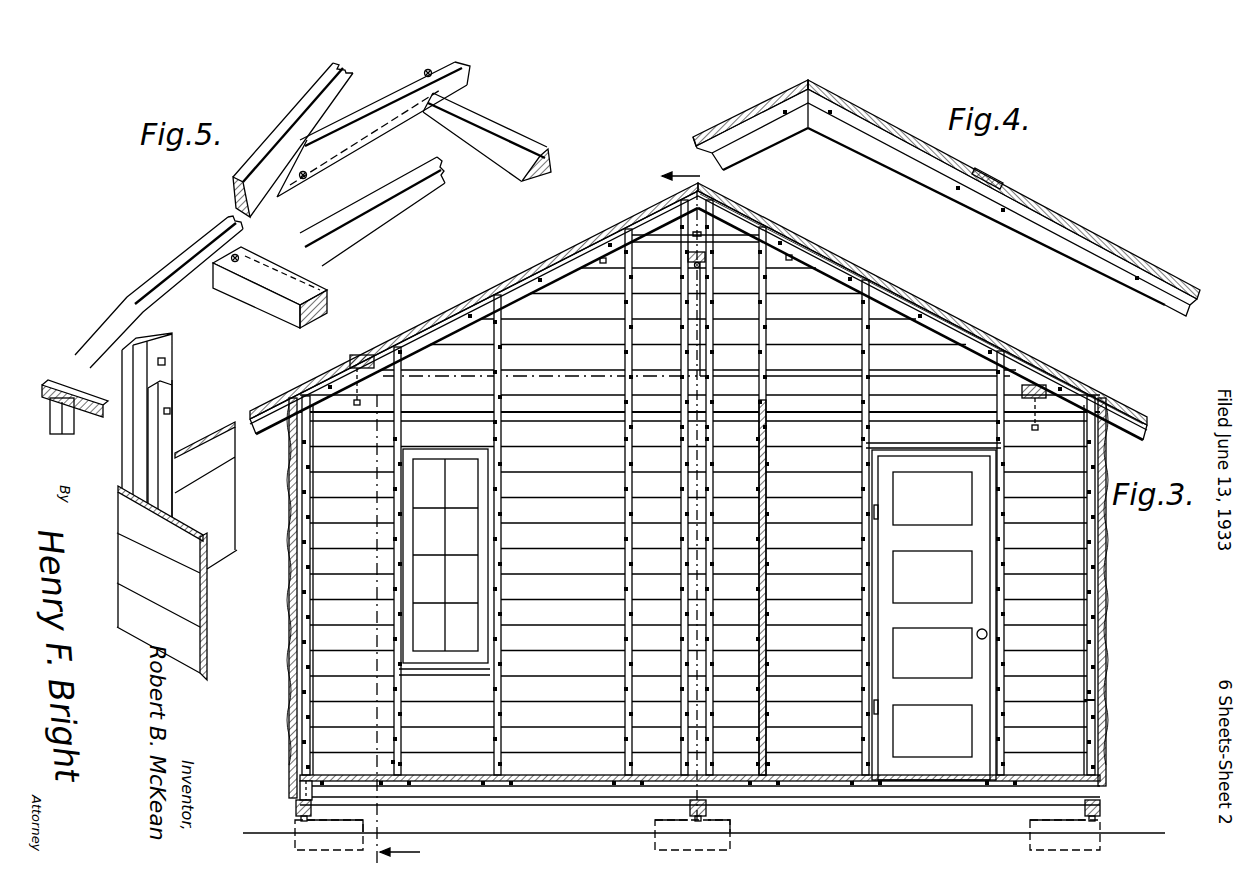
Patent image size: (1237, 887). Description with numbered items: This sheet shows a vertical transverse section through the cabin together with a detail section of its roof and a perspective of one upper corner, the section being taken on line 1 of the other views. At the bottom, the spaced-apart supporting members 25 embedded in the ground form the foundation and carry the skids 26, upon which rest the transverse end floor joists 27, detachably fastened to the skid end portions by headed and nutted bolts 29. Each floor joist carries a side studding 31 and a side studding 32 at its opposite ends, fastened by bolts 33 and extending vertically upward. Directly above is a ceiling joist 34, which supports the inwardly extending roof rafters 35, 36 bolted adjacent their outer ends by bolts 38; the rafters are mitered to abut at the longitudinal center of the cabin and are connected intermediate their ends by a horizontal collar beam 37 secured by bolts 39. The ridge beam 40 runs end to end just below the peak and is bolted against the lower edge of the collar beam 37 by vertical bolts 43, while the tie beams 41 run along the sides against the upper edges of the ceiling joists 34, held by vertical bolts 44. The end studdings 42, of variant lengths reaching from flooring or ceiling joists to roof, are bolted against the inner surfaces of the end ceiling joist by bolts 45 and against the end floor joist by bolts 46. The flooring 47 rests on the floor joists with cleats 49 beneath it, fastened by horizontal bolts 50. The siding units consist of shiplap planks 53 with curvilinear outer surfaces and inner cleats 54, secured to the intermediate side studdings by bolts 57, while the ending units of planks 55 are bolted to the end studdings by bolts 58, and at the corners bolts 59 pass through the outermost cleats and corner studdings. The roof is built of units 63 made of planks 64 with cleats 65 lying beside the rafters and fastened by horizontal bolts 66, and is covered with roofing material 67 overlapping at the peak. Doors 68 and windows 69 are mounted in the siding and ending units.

In FIG. 3, the section line 1 is at (538, 516).
In FIG. 3, the supporting members 25 is at (296, 825).
In FIG. 3, the skids 26 is at (296, 808).
In FIG. 3, the end floor joists 27 is at (494, 794).
In FIG. 3, the headed and nutted bolts 29 is at (308, 828).
In FIG. 3, the side studding 31 is at (312, 562).
In FIG. 3, the side studding 32 is at (1084, 556).
In FIG. 3, the headed and nutted bolts 33 is at (298, 785).
In FIG. 3, the ceiling joists 34 is at (550, 396).
In FIG. 5, the ceiling joists 34 is at (392, 215).
In FIG. 3, the roof rafter 35 is at (540, 290).
In FIG. 4, the roof rafter 35 is at (780, 143).
In FIG. 5, the roof rafter 35 is at (240, 180).
In FIG. 3, the roof rafter 36 is at (850, 288).
In FIG. 4, the roof rafter 36 is at (1042, 244).
In FIG. 3, the collar beam 37 is at (724, 243).
In FIG. 5, the collar beam 37 is at (365, 138).
In FIG. 3, the headed and nutted bolts 38 is at (312, 410).
In FIG. 5, the headed and nutted bolts 38 is at (165, 362).
In FIG. 3, the headed and nutted bolts 39 is at (605, 266).
In FIG. 5, the headed and nutted bolts 39 is at (306, 178).
In FIG. 3, the ridge beam 40 is at (688, 260).
In FIG. 5, the ridge beam 40 is at (512, 138).
In FIG. 3, the tie beams 41 is at (366, 355).
In FIG. 5, the tie beams 41 is at (312, 288).
In FIG. 3, the end studdings 42 is at (688, 340).
In FIG. 3, the headed and nutted bolts 43 is at (700, 267).
In FIG. 5, the headed and nutted bolts 43 is at (440, 78).
In FIG. 3, the headed and nutted bolts 44 is at (358, 406).
In FIG. 5, the headed and nutted bolts 44 is at (237, 257).
In FIG. 3, the headed and nutted bolts 45 is at (632, 414).
In FIG. 3, the headed and nutted bolts 46 is at (400, 762).
In FIG. 3, the flooring 47 is at (552, 782).
In FIG. 3, the cleats 49 is at (844, 788).
In FIG. 3, the headed and nutted bolts 50 is at (918, 788).
In FIG. 3, the planks 53 is at (290, 484).
In FIG. 5, the planks 53 is at (177, 551).
In FIG. 3, the cleats 54 is at (312, 532).
In FIG. 5, the cleats 54 is at (168, 432).
In FIG. 3, the planks 55 is at (690, 638).
In FIG. 3, the headed and nutted bolts 57 is at (1086, 715).
In FIG. 3, the headed and nutted bolts 58 is at (624, 498).
In FIG. 3, the headed and nutted bolts 59 is at (310, 492).
In FIG. 5, the headed and nutted bolts 59 is at (172, 408).
In FIG. 3, the roof units 63 is at (570, 263).
In FIG. 4, the roof units 63 is at (1110, 245).
In FIG. 5, the roof units 63 is at (52, 384).
In FIG. 3, the planks 64 is at (930, 322).
In FIG. 4, the planks 64 is at (935, 187).
In FIG. 3, the cleats 65 is at (472, 308).
In FIG. 4, the cleats 65 is at (746, 150).
In FIG. 5, the cleats 65 is at (60, 412).
In FIG. 3, the headed and nutted bolts 66 is at (456, 332).
In FIG. 4, the headed and nutted bolts 66 is at (830, 116).
In FIG. 3, the roofing material 67 is at (587, 248).
In FIG. 4, the roofing material 67 is at (742, 118).
In FIG. 3, the doors 68 is at (868, 687).
In FIG. 3, the windows 69 is at (470, 622).